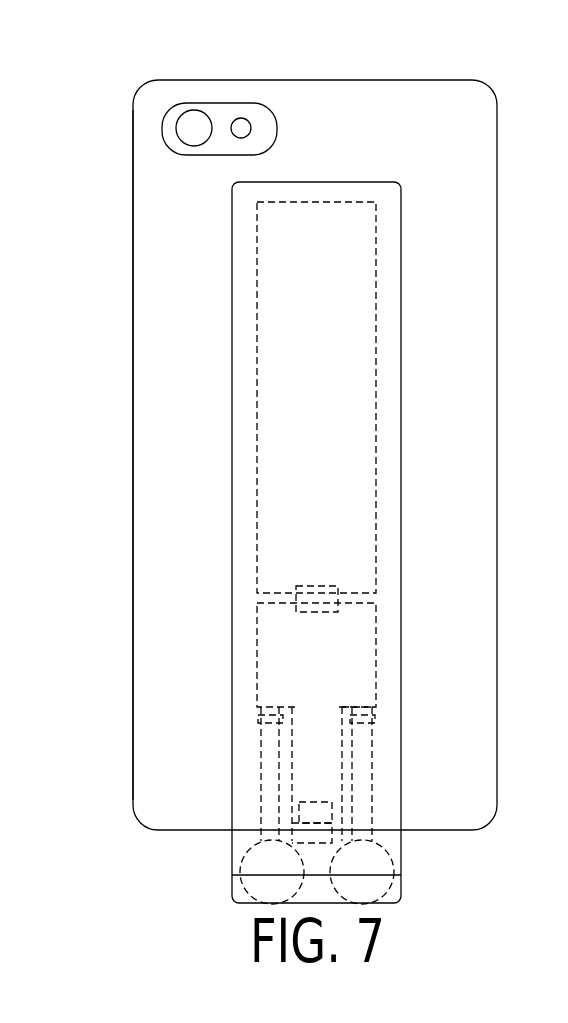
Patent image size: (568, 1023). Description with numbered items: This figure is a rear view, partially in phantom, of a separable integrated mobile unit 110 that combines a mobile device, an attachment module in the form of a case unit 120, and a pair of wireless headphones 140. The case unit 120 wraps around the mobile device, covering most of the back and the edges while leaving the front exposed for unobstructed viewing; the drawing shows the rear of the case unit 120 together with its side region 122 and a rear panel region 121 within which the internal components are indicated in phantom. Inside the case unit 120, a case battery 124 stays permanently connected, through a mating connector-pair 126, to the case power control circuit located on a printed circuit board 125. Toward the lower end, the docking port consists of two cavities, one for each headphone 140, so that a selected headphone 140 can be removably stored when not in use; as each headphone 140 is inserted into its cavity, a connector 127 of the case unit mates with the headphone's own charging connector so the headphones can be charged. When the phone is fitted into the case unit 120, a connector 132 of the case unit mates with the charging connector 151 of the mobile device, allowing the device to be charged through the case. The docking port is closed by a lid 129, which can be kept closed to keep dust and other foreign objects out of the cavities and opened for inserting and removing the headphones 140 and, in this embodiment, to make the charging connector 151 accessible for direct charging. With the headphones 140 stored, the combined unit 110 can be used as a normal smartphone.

The separable integrated mobile unit 110 is at (267, 458).
The case unit 120 is at (383, 97).
The side wall of case 122 is at (160, 185).
The recessed panel 121 is at (230, 440).
The case battery 124 is at (288, 508).
The mating connector-pair 126 is at (310, 587).
The printed circuit board 125 is at (313, 643).
The connector of the case unit 127 is at (263, 712).
The wireless headphone 140 is at (272, 741).
The charging connector of the mobile device 151 is at (314, 812).
The connector of the case unit 132 is at (313, 837).
The lid 129 is at (401, 883).